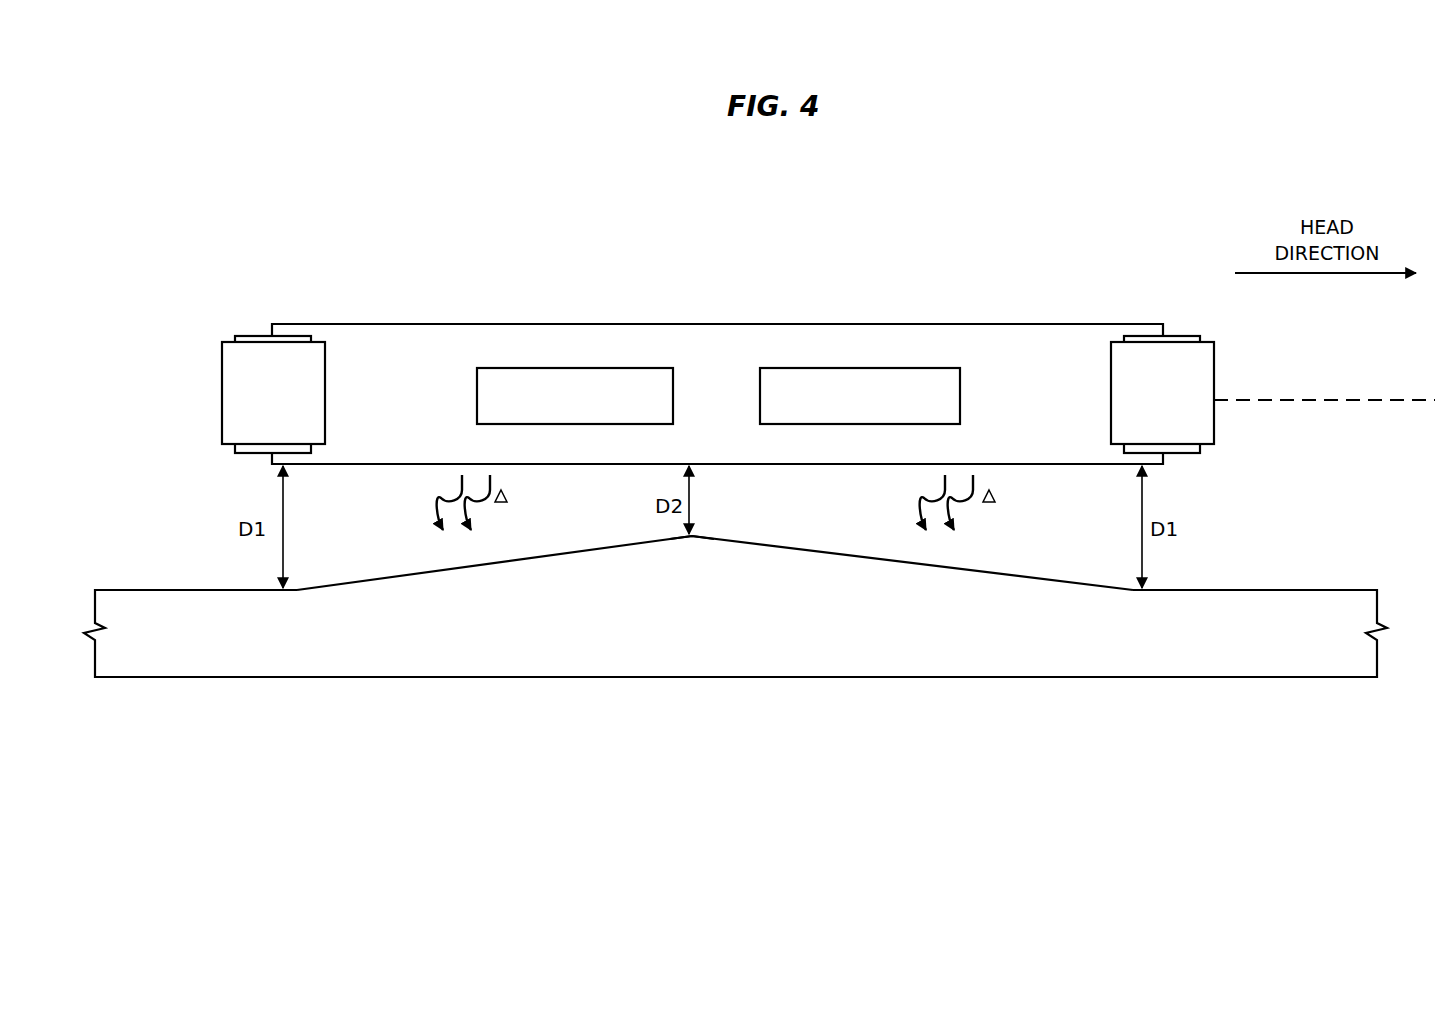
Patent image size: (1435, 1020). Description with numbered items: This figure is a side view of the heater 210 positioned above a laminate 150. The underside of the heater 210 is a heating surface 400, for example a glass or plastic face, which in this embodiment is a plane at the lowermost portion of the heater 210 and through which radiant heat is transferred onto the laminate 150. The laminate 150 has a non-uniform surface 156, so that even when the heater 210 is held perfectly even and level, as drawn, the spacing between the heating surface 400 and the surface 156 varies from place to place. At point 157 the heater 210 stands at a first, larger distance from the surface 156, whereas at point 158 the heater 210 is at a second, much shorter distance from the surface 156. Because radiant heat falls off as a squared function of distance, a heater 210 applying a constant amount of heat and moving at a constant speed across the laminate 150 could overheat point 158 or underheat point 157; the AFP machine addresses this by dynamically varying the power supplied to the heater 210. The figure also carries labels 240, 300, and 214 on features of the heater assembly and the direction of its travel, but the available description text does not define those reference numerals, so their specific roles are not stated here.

The heater 210 is at (748, 296).
The roller 240 is at (228, 394).
The head travel axis 300 is at (1338, 398).
The heating surface 400 is at (560, 466).
The ejected drops 214 is at (440, 500).
The laminate 150 is at (1057, 727).
The surface 156 is at (1280, 588).
The point/location 157 is at (300, 589).
The point/location 158 is at (695, 534).